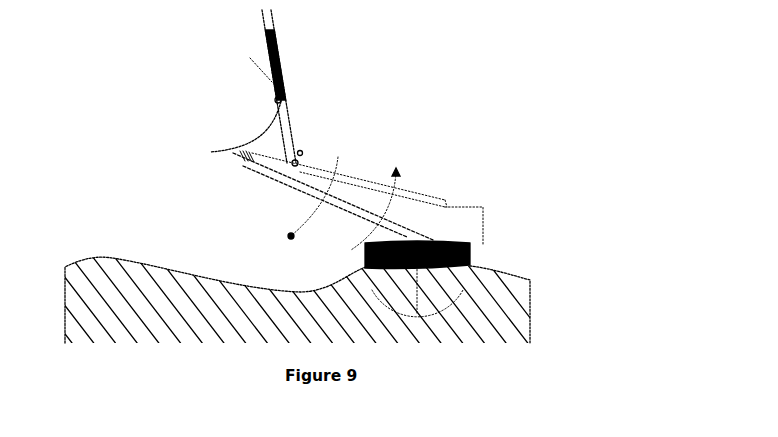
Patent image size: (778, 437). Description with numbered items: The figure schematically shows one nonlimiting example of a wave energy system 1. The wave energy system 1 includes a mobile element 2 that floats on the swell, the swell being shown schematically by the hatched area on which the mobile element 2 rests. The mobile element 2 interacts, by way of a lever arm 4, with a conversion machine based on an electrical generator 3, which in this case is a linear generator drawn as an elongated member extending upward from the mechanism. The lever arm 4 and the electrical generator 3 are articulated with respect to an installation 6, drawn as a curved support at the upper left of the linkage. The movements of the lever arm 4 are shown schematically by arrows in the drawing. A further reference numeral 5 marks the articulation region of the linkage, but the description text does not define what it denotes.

The wave energy system 1 is at (522, 71).
The mobile element 2 is at (466, 256).
The electrical generator 3 is at (287, 59).
The lever arm 4 is at (286, 181).
The pivot joint 5 is at (303, 151).
The installation 6 is at (264, 122).